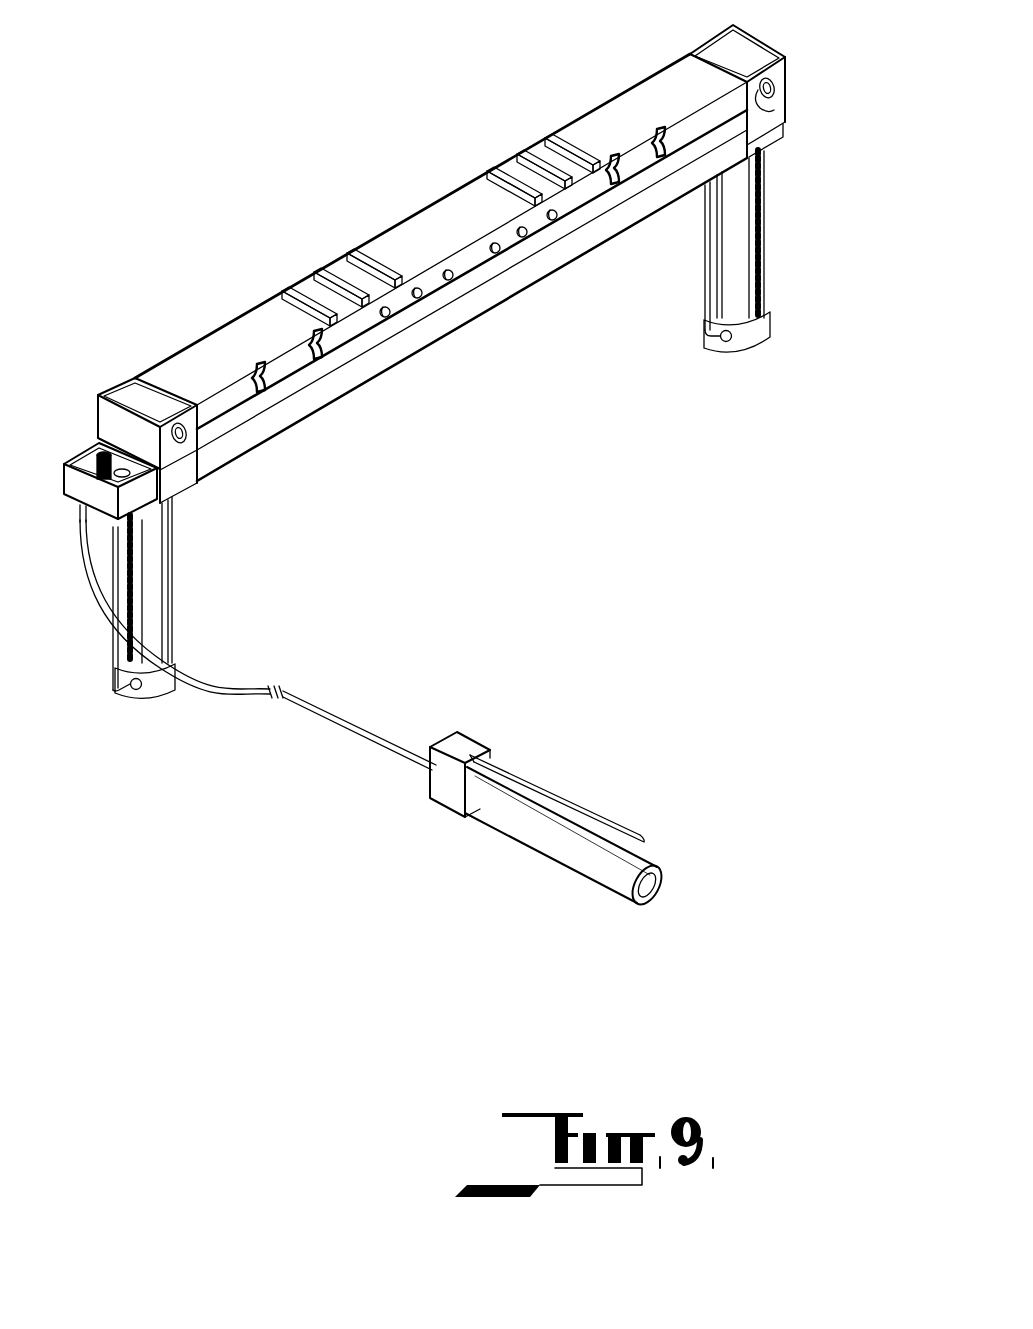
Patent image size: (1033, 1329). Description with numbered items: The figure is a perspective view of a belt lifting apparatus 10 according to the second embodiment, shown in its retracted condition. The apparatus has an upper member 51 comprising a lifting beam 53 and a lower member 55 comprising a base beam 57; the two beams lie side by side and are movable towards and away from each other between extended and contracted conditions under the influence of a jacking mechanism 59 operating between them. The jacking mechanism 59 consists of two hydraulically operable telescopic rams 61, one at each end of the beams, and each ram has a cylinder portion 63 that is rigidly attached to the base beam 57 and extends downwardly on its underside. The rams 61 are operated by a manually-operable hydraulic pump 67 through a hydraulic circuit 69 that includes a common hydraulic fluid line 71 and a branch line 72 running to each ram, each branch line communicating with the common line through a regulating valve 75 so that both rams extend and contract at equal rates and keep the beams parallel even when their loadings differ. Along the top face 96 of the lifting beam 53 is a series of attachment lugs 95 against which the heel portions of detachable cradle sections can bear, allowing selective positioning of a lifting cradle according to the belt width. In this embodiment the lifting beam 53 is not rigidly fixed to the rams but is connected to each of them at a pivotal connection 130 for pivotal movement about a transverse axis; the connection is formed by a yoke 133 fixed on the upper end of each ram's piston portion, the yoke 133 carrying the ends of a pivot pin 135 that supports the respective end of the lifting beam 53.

The belt lifting apparatus 10 is at (203, 338).
The upper member 51 is at (665, 70).
The lifting beam 53 is at (591, 116).
The lower member 55 is at (360, 380).
The base beam 57 is at (463, 317).
The jacking mechanism 59 is at (467, 419).
The hydraulically operable telescopic ram 61 is at (166, 568).
The cylinder portion 63 is at (168, 520).
The manually-operable hydraulic pump 67 is at (520, 822).
The hydraulic circuit 69 is at (224, 696).
The common hydraulic fluid line 71 is at (318, 718).
The branch line 72 is at (116, 670).
The regulating valve 75 is at (100, 452).
The attachment lug 95 is at (372, 258).
The top face 96 is at (455, 213).
The pivotal connection 130 is at (770, 104).
The yoke 133 is at (782, 70).
The pivot pin 135 is at (773, 92).